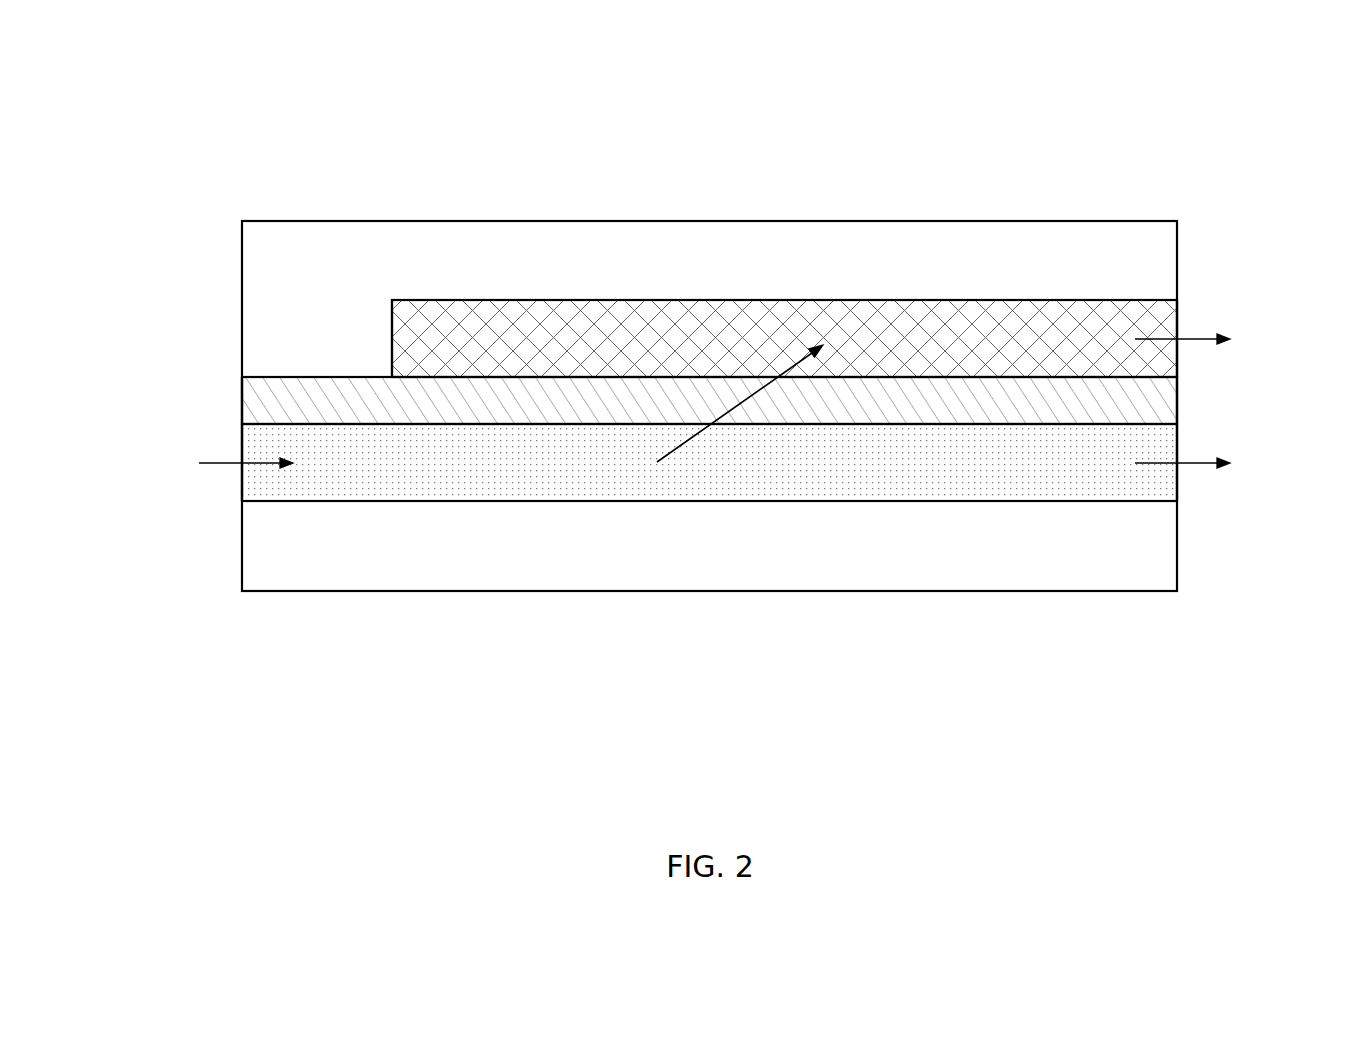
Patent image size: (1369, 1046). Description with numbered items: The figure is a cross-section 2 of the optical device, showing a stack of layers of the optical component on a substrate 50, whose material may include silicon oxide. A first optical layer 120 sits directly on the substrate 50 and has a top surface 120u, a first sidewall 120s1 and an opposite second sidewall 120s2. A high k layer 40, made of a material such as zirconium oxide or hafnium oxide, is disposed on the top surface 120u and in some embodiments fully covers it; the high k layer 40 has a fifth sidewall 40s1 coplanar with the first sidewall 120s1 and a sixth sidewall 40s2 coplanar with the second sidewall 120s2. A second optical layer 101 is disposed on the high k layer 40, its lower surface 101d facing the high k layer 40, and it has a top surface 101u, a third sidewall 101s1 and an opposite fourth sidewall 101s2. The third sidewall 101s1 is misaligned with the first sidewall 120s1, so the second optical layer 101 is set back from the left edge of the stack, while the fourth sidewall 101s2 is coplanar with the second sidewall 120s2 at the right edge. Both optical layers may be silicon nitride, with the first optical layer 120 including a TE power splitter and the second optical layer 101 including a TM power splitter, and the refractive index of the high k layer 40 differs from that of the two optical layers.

The cross-section 2 is at (108, 103).
The substrate 50 is at (280, 260).
The second optical layer 101 is at (579, 339).
The lower surface of light-transmitting layer 101d is at (478, 377).
The top surface 101u is at (763, 300).
The third sidewall 101s1 is at (392, 340).
The fourth sidewall 101s2 is at (1177, 315).
The high k layer 40 is at (682, 408).
The fifth sidewall 40s1 is at (242, 396).
The sixth sidewall 40s2 is at (1177, 395).
The first optical layer 120 is at (580, 463).
The top surface 120u is at (478, 424).
The first sidewall 120s1 is at (242, 448).
The second sidewall 120s2 is at (1177, 447).